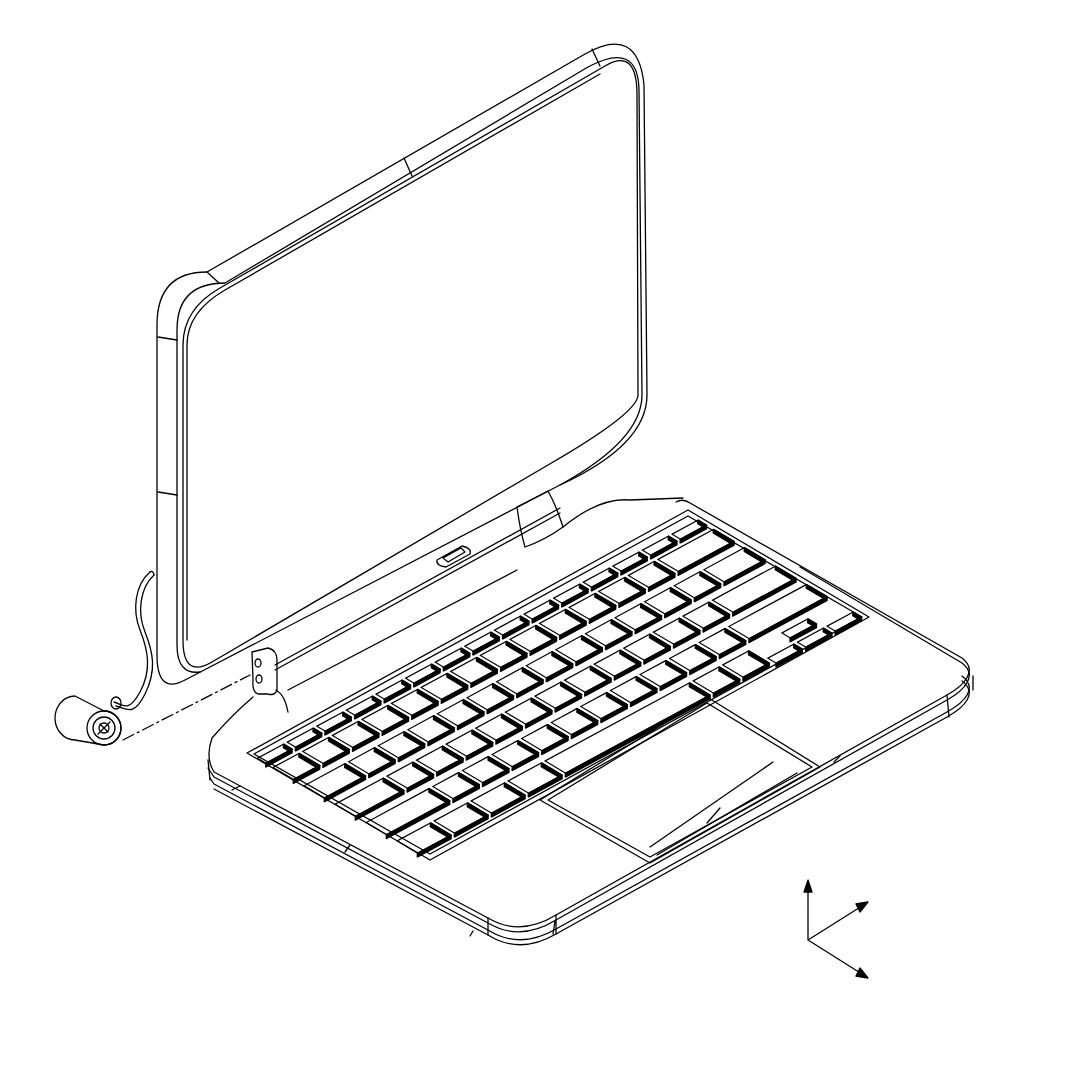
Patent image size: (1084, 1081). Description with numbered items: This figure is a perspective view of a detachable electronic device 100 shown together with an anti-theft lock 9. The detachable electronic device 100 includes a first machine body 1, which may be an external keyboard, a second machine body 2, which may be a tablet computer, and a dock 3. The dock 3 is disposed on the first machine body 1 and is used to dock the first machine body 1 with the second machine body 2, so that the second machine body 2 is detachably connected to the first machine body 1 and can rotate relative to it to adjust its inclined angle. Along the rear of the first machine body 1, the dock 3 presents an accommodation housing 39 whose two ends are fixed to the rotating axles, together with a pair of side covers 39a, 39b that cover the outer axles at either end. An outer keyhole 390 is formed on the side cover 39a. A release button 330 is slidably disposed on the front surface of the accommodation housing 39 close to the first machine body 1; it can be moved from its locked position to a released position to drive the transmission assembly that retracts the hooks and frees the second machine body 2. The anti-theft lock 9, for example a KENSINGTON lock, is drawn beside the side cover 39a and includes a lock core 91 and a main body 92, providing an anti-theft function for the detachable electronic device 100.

The detachable electronic device 100 is at (752, 66).
The first machine body 1 is at (880, 610).
The second machine body 2 is at (623, 277).
The dock 3 is at (566, 496).
The accommodation housing 39 is at (417, 580).
The side cover 39a is at (200, 681).
The side cover 39b is at (548, 523).
The outer keyhole 390 is at (252, 663).
The release button 330 is at (457, 553).
The anti-theft lock 9 is at (95, 667).
The lock core 91 is at (120, 742).
The main body 92 is at (72, 722).